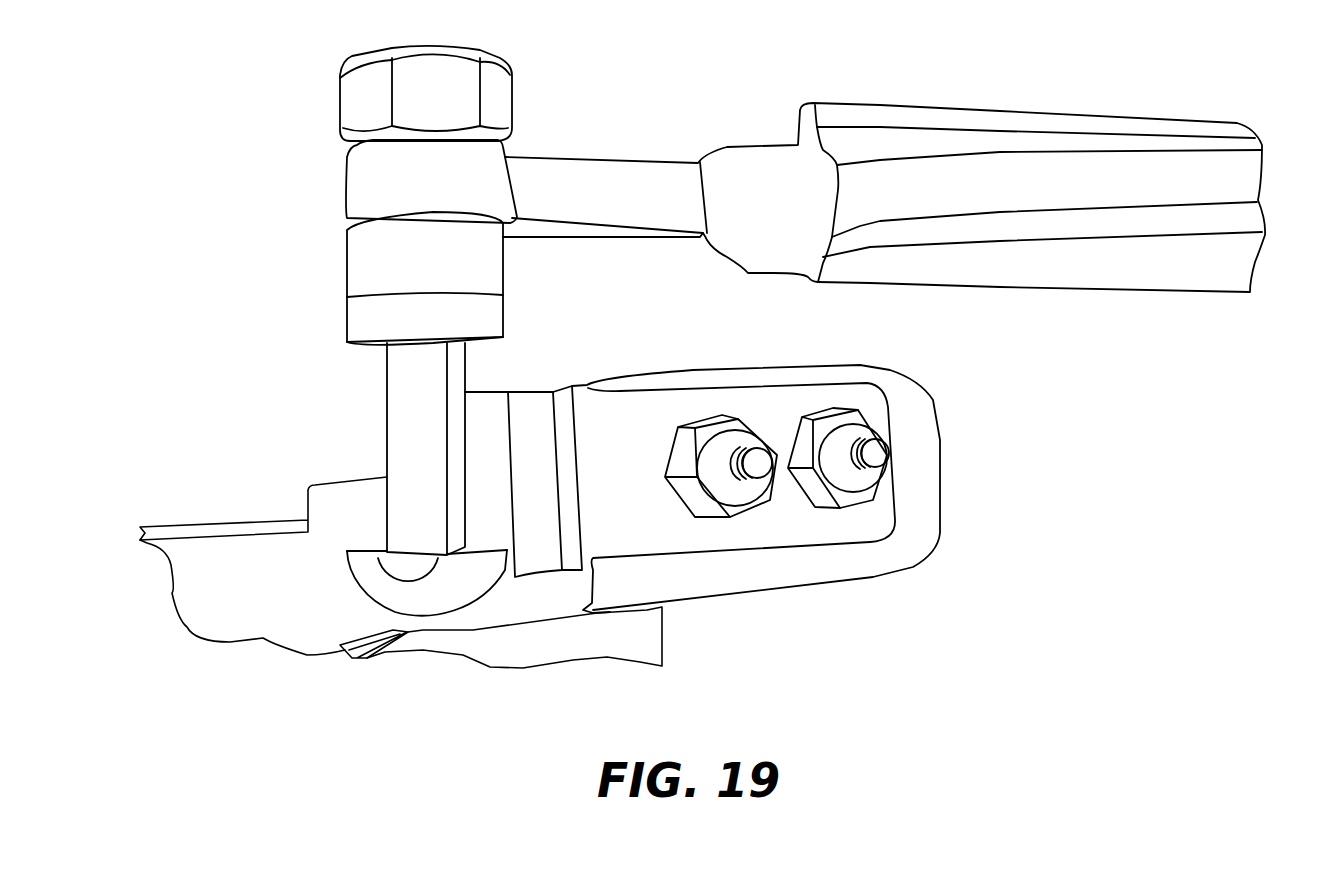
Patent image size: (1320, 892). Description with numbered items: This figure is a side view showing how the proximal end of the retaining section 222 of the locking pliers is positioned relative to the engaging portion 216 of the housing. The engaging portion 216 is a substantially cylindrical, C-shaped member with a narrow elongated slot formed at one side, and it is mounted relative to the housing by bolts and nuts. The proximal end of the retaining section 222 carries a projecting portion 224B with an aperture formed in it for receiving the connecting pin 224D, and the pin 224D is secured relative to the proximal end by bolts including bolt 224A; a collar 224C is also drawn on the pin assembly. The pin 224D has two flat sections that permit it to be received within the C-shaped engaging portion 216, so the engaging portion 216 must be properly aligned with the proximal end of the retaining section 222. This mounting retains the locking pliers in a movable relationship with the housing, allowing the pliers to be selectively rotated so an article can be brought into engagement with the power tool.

The bolt 224A is at (340, 95).
The projecting portion 224B is at (410, 183).
The cylindrical collar 224C is at (480, 260).
The connecting pin 224D is at (413, 475).
The retaining section 222 is at (645, 213).
The engaging portion 216 is at (513, 437).